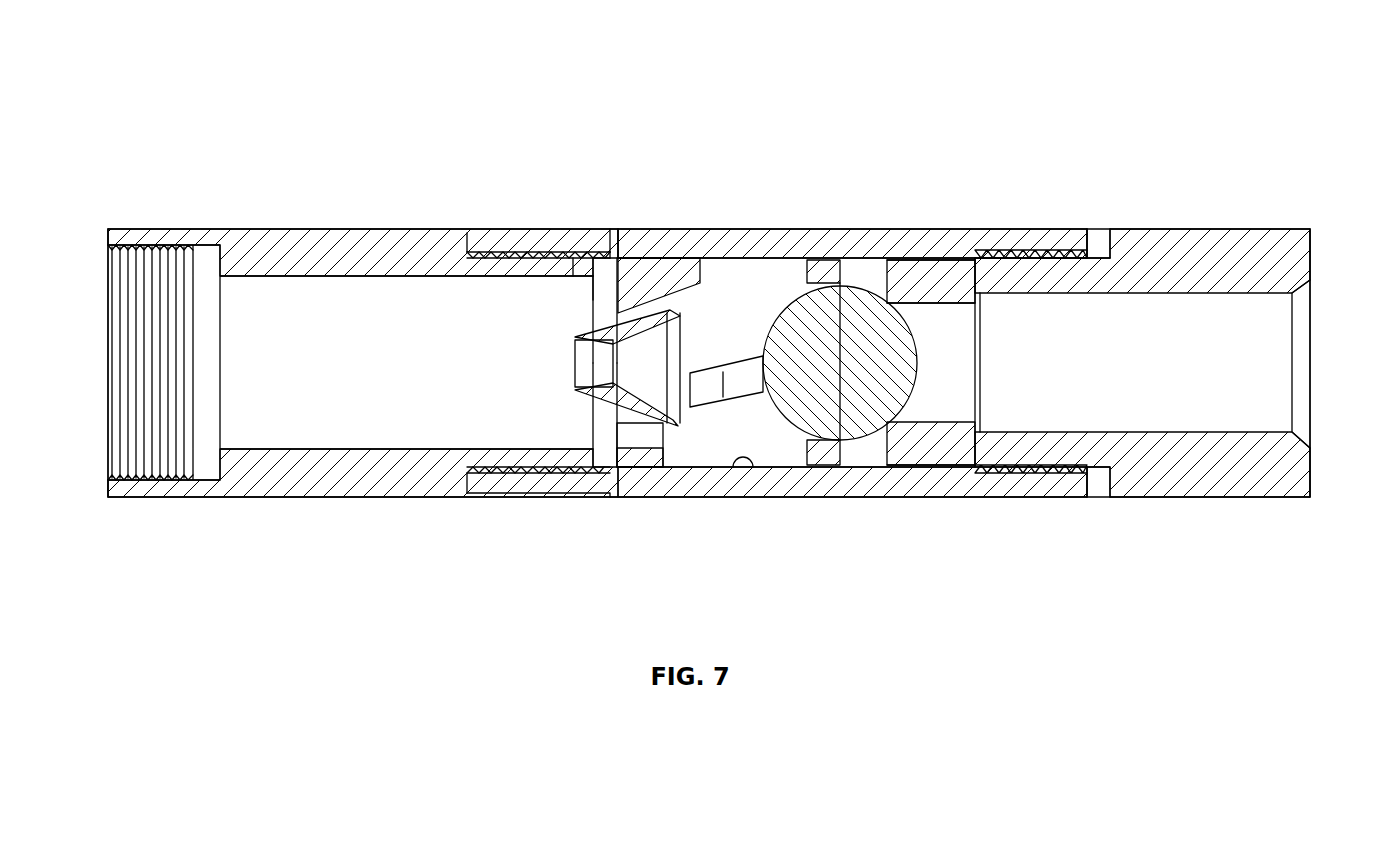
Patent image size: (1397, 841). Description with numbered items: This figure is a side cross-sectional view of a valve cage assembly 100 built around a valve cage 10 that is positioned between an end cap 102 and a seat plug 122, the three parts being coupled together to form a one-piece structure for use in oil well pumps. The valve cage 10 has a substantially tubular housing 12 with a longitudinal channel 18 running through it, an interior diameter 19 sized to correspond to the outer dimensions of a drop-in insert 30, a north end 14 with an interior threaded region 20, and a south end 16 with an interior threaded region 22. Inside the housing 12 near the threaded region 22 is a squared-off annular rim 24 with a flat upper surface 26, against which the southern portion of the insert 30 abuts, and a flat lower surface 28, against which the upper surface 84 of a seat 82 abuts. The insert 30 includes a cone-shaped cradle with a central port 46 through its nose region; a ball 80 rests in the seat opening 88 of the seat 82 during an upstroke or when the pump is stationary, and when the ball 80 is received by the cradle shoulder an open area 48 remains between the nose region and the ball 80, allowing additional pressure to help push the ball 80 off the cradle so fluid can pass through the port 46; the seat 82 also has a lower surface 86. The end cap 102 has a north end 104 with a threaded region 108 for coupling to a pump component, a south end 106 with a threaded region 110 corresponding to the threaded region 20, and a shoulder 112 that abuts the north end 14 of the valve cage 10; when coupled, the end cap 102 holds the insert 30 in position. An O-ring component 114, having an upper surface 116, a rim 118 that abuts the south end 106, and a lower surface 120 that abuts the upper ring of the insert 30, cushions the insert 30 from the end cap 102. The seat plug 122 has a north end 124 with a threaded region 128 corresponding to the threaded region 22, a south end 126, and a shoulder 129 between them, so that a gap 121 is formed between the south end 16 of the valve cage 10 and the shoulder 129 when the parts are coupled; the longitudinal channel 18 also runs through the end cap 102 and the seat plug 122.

The valve cage assembly 100 is at (1218, 95).
The valve cage 10 is at (772, 208).
The housing 12 is at (700, 240).
The north end 14 is at (467, 240).
The south end 16 is at (1103, 232).
The longitudinal channel 18 is at (104, 336).
The interior diameter 19 is at (742, 462).
The threaded region 20 is at (513, 252).
The threaded region 22 is at (960, 250).
The annular rim 24 is at (835, 463).
The upper surface 26 is at (805, 455).
The lower surface 28 is at (855, 463).
The insert 30 is at (680, 278).
The port 46 is at (578, 376).
The open area 48 is at (603, 445).
The ball 80 is at (795, 308).
The seat 82 is at (930, 470).
The upper surface 84 is at (890, 256).
The lower surface 86 is at (920, 305).
The opening 88 is at (948, 378).
The end cap 102 is at (252, 226).
The north end 104 is at (108, 480).
The south end 106 is at (593, 440).
The threaded region 108 is at (160, 478).
The threaded region 110 is at (510, 465).
The shoulder 112 is at (468, 482).
The O-ring component 114 is at (578, 256).
The upper surface 116 is at (573, 268).
The rim 118 is at (593, 300).
The lower surface 120 is at (613, 256).
The gap 121 is at (1098, 240).
The seat plug 122 is at (1163, 226).
The north end 124 is at (1000, 252).
The south end 126 is at (1310, 258).
The threaded region 128 is at (1040, 465).
The shoulder 129 is at (1103, 497).